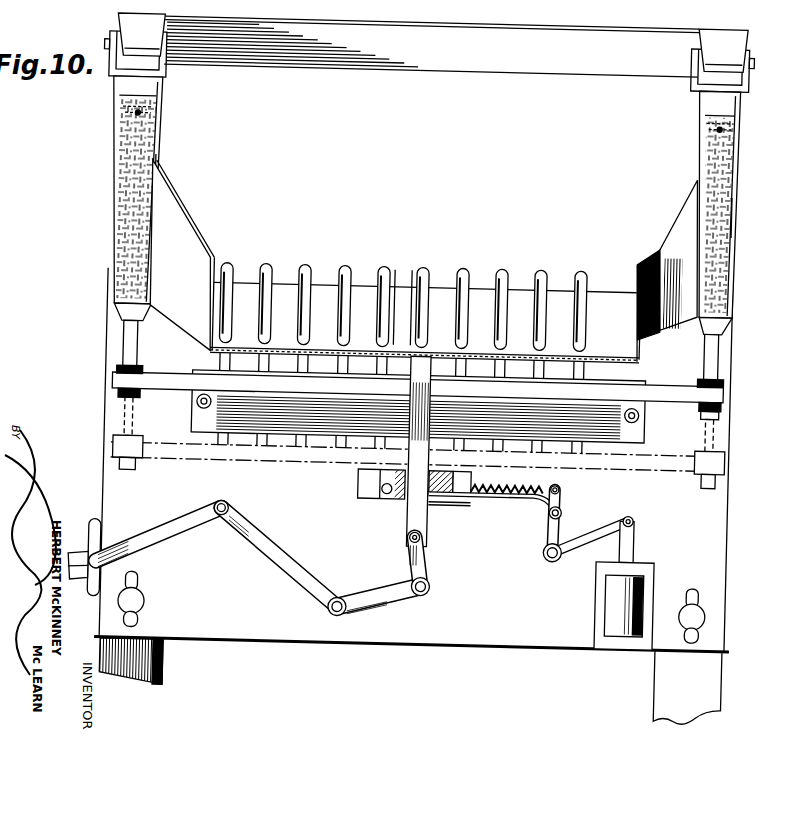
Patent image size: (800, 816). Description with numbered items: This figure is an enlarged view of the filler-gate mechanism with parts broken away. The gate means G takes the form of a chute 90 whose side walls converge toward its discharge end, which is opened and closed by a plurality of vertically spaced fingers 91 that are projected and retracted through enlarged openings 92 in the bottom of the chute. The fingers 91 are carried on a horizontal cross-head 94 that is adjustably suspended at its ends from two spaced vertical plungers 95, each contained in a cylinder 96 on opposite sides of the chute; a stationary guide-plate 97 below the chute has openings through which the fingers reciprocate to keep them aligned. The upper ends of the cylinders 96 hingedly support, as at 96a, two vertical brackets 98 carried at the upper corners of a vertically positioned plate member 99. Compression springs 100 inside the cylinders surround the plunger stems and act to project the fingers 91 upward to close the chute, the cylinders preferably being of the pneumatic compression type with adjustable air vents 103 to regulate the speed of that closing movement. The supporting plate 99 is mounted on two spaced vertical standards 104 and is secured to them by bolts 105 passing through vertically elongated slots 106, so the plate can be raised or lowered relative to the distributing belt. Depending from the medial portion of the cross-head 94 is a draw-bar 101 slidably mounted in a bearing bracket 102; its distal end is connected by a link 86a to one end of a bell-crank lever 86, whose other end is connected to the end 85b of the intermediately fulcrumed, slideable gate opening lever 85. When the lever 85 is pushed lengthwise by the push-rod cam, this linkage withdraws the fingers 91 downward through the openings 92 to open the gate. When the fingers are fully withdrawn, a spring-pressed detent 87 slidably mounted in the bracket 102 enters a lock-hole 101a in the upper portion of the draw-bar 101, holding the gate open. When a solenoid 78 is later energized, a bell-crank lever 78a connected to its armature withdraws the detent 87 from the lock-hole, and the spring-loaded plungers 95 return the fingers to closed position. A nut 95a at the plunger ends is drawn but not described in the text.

The solenoid 78 is at (620, 594).
The bell-crank lever 78a is at (596, 527).
The gate opening lever 85 is at (91, 536).
The end of lever 85b is at (146, 540).
The bell-crank lever 86 is at (345, 567).
The link 86a is at (433, 559).
The spring-pressed detent 87 is at (501, 500).
The chute 90 is at (400, 283).
The fingers 91 is at (383, 269).
The openings 92 is at (392, 343).
The cross-head 94 is at (167, 396).
The plungers 95 is at (122, 337).
The nut 95a is at (140, 374).
The cylinders 96 is at (153, 140).
The hinge 96a is at (162, 68).
The guide-plate 97 is at (202, 426).
The brackets 98 is at (106, 178).
The plate member 99 is at (712, 502).
The compression springs 100 is at (158, 163).
The draw-bar 101 is at (410, 521).
The lock-hole 101a is at (436, 430).
The bearing bracket 102 is at (441, 497).
The air vents 103 is at (124, 120).
The standards 104 is at (170, 665).
The bolts 105 is at (148, 607).
The slots 106 is at (146, 629).
The gate means G is at (553, 254).